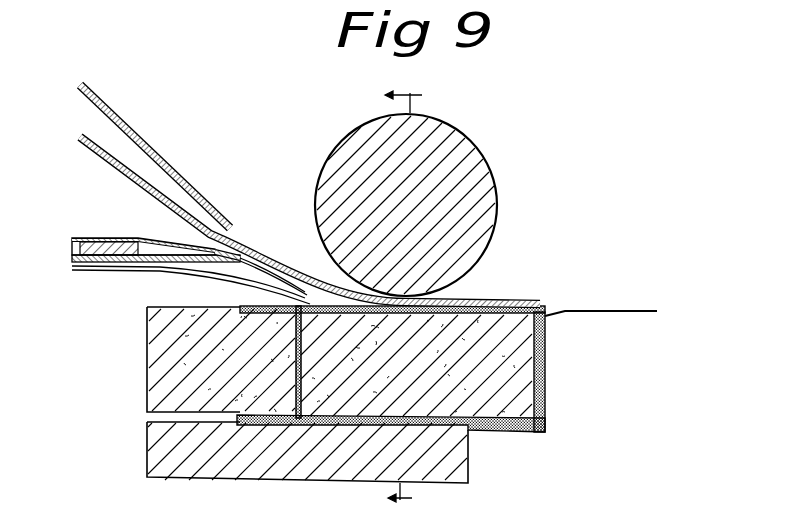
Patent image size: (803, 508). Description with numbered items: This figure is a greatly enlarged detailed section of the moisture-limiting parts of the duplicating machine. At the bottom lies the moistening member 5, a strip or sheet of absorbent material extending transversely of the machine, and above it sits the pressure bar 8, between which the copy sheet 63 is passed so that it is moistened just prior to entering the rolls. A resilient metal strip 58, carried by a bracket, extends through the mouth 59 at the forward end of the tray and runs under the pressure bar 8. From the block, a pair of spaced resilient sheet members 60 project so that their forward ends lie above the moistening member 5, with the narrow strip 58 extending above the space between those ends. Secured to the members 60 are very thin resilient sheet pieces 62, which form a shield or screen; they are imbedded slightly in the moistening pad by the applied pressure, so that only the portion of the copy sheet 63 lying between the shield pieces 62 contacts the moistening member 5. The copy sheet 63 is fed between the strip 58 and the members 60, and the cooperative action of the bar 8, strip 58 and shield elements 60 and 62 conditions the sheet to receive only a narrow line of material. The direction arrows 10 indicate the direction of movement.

The moistening member 5 is at (543, 317).
The pressure bar 8 is at (485, 160).
The direction of movement 10 is at (392, 296).
The resilient metal strip 58 is at (267, 266).
The mouth 59 is at (230, 236).
The resilient sheet members 60 is at (146, 270).
The resilient sheet pieces 62 is at (260, 291).
The copy sheet 63 is at (592, 311).